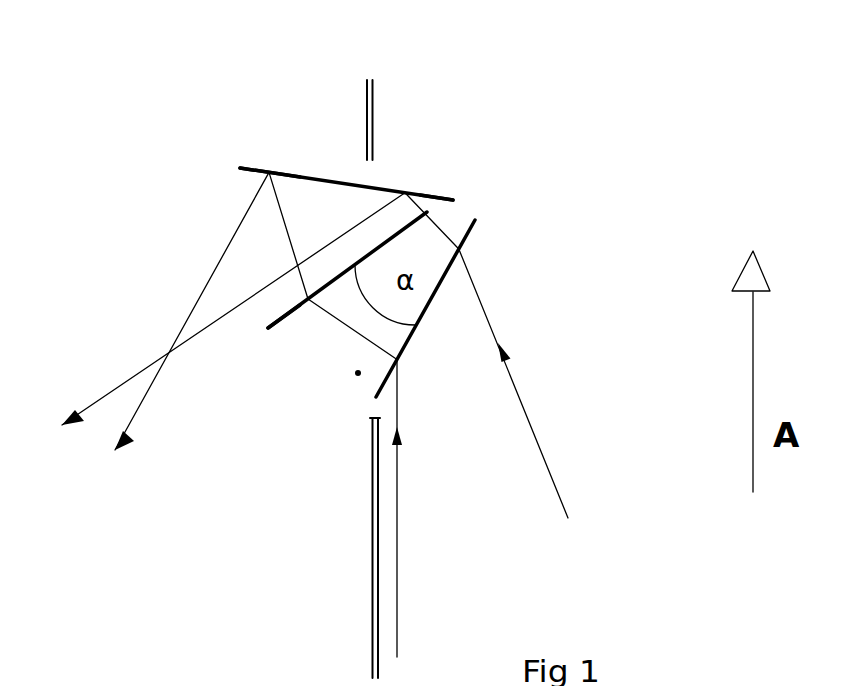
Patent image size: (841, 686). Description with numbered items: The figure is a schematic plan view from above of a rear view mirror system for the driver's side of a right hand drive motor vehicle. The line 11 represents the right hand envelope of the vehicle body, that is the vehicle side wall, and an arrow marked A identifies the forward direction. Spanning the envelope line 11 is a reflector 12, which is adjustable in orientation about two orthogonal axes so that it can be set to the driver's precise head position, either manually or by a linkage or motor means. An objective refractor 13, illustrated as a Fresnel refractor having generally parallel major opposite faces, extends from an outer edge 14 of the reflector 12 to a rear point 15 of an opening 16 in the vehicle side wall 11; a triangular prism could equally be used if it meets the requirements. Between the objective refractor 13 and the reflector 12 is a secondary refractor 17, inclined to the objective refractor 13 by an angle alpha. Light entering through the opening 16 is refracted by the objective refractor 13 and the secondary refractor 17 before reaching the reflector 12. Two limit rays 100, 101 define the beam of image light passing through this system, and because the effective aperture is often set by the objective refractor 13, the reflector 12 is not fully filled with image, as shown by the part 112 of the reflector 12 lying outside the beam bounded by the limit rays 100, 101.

The envelope line 11 is at (374, 83).
The reflector 12 is at (317, 175).
The objective refractor 13 is at (477, 228).
The outer edge 14 is at (453, 198).
The rear point 15 is at (370, 418).
The opening 16 is at (358, 373).
The secondary refractor 17 is at (278, 317).
The limit ray 100 is at (527, 413).
The limit ray 101 is at (397, 473).
The part of the reflector outside the beam 112 is at (257, 170).